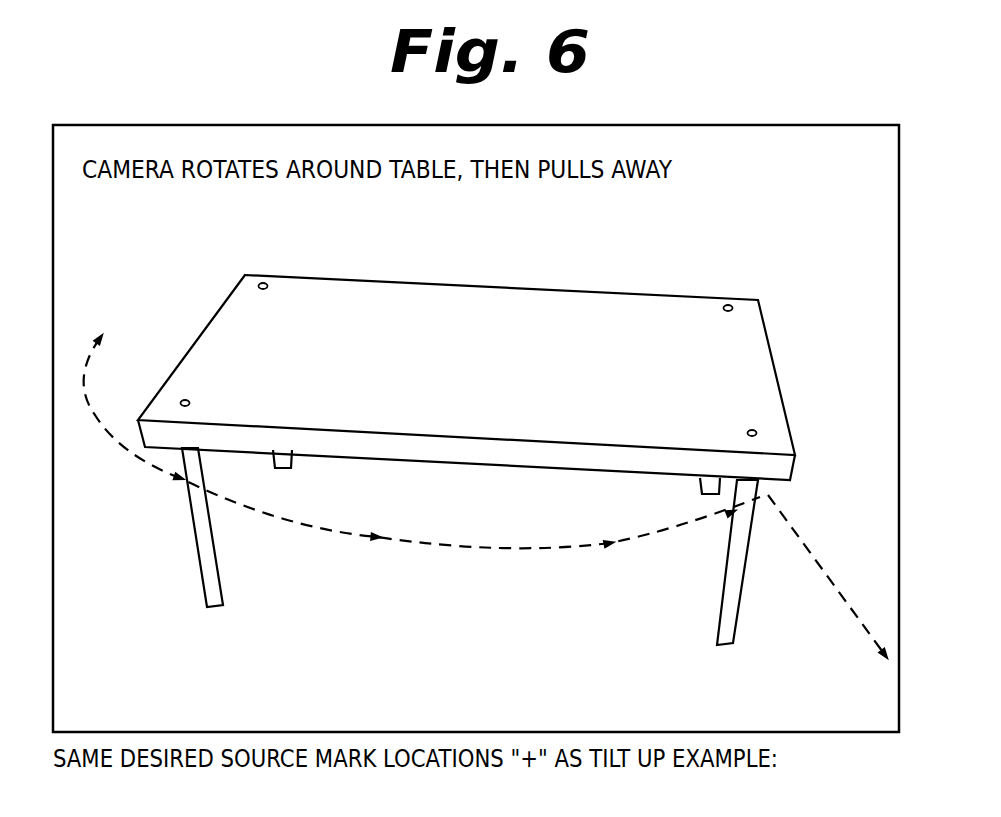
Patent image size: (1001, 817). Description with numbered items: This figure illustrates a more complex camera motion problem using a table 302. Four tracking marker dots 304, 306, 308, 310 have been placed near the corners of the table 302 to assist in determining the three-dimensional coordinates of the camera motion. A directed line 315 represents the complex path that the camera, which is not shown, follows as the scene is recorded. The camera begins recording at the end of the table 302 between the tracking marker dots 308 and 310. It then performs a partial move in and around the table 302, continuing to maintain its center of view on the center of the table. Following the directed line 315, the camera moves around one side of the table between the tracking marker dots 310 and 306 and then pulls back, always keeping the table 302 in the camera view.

The table 302 is at (477, 452).
The tracking marker dot 304 is at (729, 304).
The tracking marker dot 306 is at (756, 430).
The tracking marker dot 308 is at (266, 282).
The tracking marker dot 310 is at (185, 399).
The directed line 315 is at (497, 548).